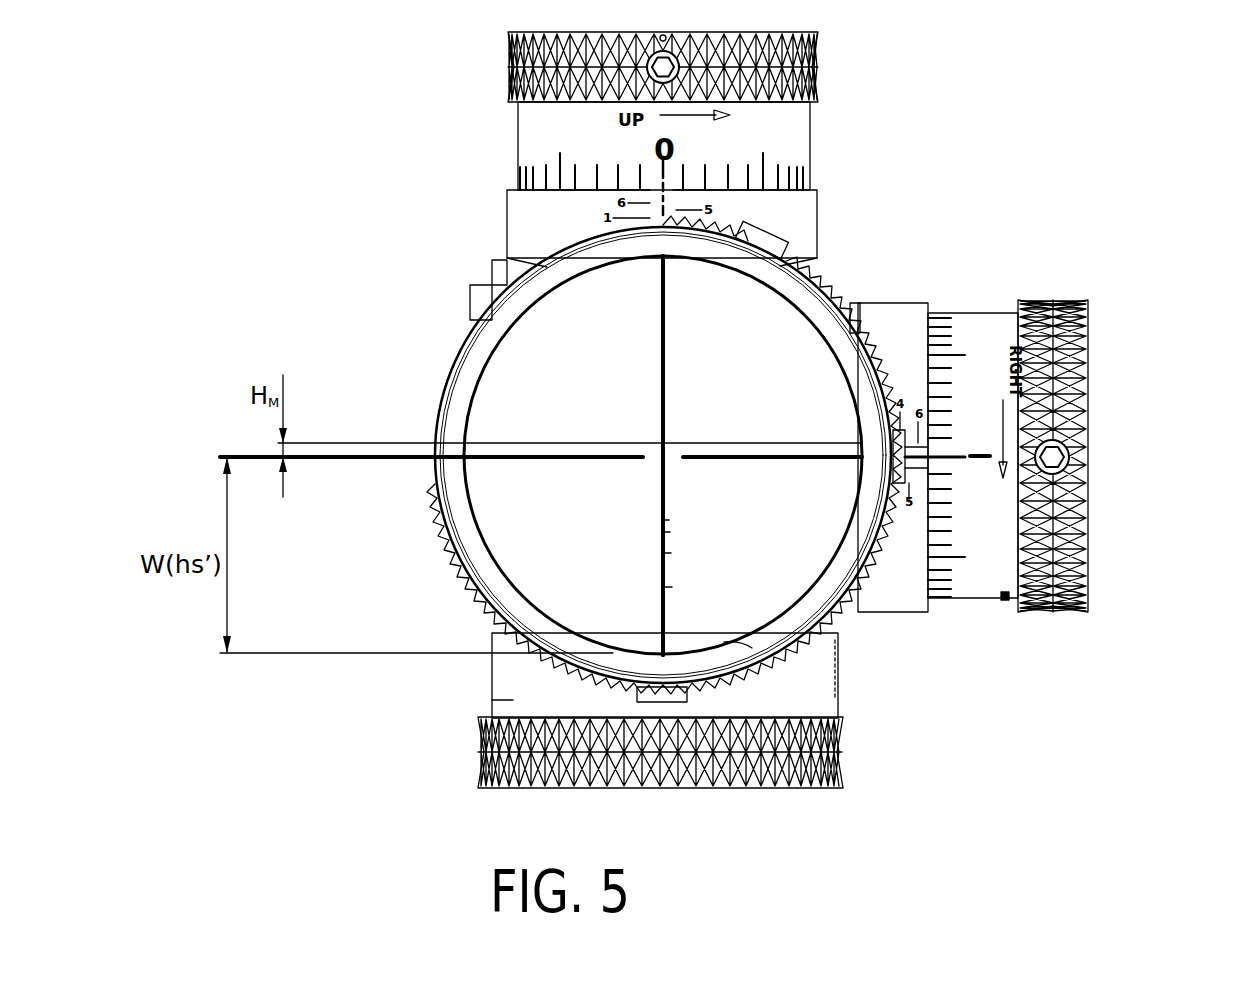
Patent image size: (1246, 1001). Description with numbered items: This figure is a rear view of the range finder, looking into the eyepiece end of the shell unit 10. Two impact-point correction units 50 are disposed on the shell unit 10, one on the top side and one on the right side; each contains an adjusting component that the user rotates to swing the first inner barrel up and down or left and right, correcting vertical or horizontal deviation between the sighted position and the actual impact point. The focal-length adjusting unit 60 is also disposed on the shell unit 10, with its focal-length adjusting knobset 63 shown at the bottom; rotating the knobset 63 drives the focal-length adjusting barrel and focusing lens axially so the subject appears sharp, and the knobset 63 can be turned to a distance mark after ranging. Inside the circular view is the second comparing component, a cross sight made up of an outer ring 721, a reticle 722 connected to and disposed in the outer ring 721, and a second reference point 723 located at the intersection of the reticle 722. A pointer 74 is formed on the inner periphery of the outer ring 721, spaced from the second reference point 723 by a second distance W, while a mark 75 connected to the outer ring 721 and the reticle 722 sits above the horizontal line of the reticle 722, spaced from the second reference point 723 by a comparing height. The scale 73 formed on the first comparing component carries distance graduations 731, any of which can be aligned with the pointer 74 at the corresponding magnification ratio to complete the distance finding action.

The shell unit 10 is at (446, 351).
The impact-point correction unit 50 is at (496, 66).
The focal-length adjusting unit 60 is at (478, 680).
The focal-length adjusting knobset 63 is at (492, 700).
The scale 73 is at (742, 699).
The distance graduation 731 is at (717, 640).
The pointer 74 is at (650, 654).
The mark 75 is at (730, 443).
The outer ring 721 is at (807, 610).
The reticle 722 is at (787, 462).
The second reference point 723 is at (663, 453).